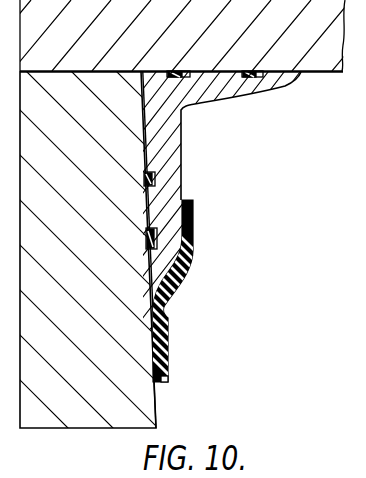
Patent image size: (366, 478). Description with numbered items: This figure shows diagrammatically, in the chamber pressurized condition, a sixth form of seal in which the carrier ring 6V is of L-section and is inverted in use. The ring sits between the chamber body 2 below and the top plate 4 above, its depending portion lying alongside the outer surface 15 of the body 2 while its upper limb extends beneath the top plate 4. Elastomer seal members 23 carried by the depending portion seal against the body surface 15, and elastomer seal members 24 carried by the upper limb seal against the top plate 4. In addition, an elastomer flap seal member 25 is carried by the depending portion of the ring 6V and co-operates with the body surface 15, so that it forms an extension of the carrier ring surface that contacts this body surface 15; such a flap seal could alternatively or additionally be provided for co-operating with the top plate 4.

The chamber body 2 is at (90, 383).
The top plate 4 is at (304, 33).
The carrier ring 6V is at (163, 140).
The outer surface of the body 15 is at (158, 392).
The elastomer seal members 23 is at (150, 178).
The elastomer seal members 24 is at (175, 83).
The elastomer flap seal member 25 is at (161, 322).